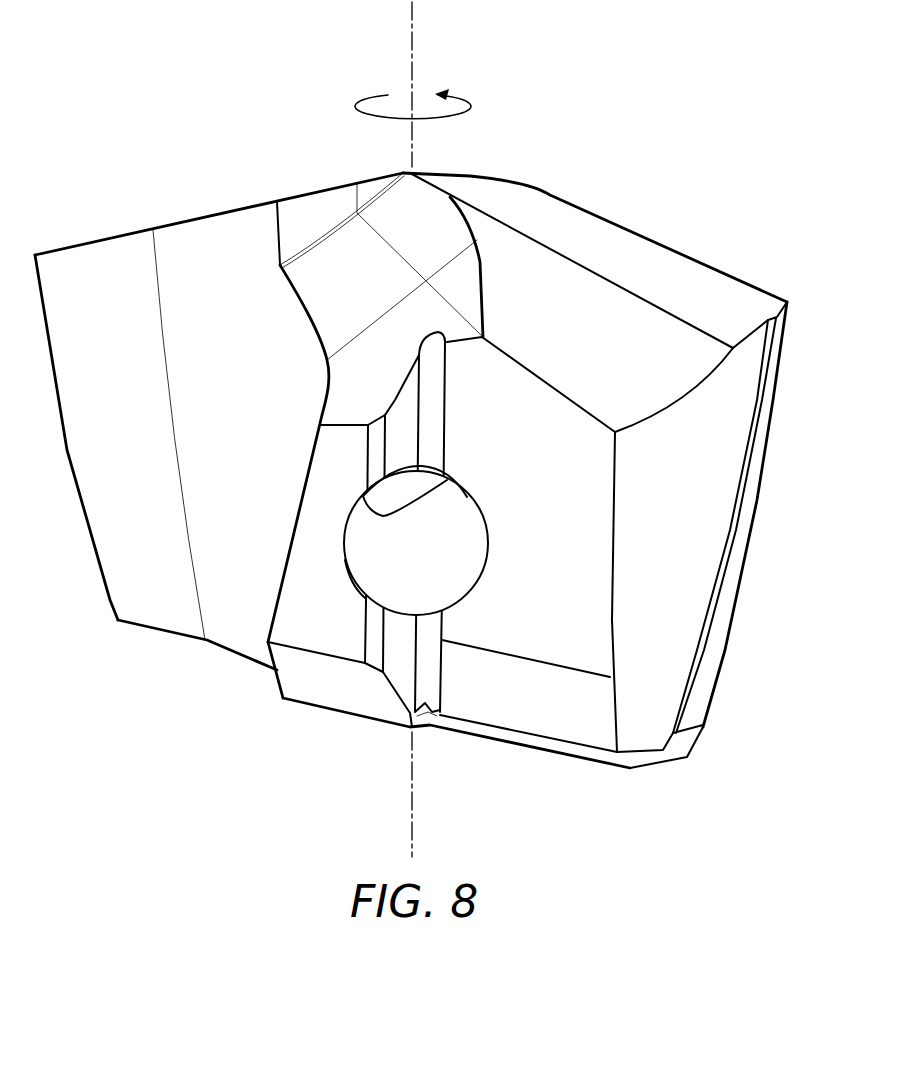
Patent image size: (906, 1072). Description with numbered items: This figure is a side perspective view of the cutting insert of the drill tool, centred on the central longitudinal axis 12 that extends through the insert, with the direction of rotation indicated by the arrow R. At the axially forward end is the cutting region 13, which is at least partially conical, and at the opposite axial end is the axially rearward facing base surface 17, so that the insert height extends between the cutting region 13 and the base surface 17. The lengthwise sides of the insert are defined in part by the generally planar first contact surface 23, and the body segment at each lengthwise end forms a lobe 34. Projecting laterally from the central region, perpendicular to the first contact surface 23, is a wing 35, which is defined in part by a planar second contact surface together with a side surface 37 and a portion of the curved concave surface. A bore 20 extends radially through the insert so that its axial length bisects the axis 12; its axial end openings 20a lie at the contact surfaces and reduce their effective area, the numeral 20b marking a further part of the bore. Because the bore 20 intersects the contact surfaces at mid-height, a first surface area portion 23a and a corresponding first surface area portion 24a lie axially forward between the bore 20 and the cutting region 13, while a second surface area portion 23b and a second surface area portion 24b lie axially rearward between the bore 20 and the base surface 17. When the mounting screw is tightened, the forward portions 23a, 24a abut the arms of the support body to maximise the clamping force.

The central longitudinal axis 12 is at (413, 17).
The direction of rotation R is at (352, 102).
The cutting region 13 is at (532, 195).
The base surface 17 is at (648, 770).
The bore 20 is at (467, 570).
The axial end openings 20a is at (477, 493).
The cylindrical side surface of projection 20b is at (347, 573).
The first contact surface 23 is at (582, 563).
The first surface area portion 23a is at (508, 408).
The second surface area portion 23b is at (552, 648).
The first surface area portion 24a is at (400, 448).
The second surface area portion 24b is at (400, 670).
The lobe 34 is at (745, 261).
The wing 35 is at (270, 718).
The side surface 37 is at (307, 522).